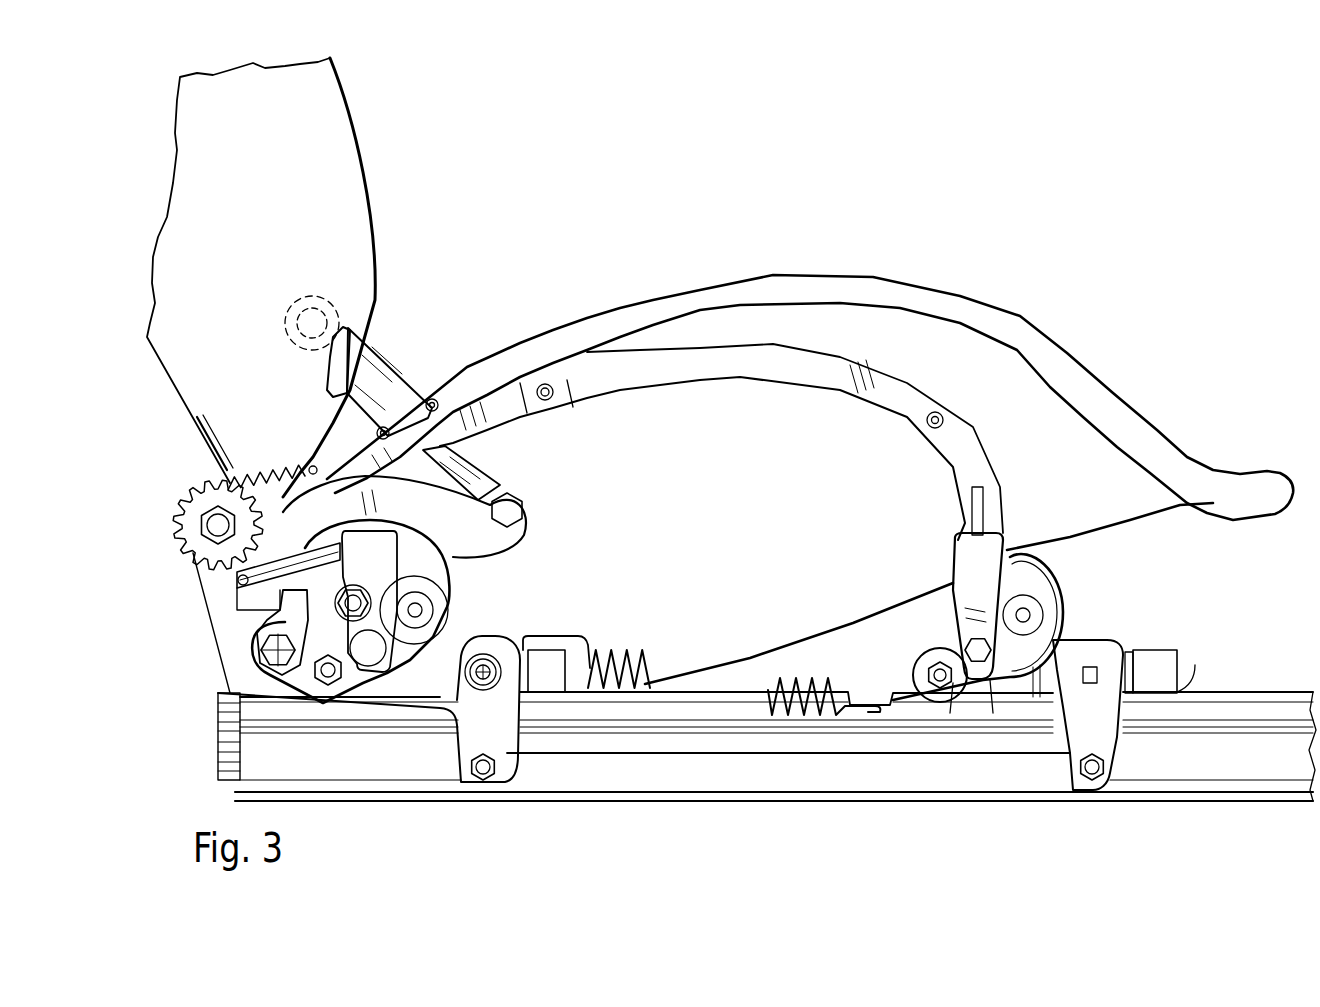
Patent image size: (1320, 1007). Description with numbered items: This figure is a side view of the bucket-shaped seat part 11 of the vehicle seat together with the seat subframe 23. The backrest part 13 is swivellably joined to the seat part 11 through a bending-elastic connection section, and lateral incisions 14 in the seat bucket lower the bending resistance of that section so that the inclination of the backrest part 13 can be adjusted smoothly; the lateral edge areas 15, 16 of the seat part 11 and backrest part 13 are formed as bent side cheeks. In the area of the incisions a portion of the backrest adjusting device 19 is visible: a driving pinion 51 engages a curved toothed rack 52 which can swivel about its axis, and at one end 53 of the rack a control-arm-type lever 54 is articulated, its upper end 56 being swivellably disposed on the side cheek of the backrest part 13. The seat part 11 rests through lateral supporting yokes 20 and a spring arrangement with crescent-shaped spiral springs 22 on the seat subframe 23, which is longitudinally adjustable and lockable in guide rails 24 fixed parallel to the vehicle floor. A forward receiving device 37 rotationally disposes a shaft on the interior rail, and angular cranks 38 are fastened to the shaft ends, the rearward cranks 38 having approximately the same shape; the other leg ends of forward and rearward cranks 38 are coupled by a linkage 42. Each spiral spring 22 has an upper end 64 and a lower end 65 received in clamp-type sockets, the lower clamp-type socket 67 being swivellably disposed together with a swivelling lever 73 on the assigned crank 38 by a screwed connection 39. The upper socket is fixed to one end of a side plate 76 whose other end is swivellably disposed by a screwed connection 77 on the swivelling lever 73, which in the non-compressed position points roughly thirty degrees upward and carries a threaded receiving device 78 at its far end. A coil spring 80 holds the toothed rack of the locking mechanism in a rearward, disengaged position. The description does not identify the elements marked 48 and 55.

The seat part 11 is at (754, 468).
The backrest part 13 is at (234, 212).
The lateral incisions 14 is at (362, 445).
The lateral edge area 15 is at (500, 362).
The lateral edge area 16 is at (376, 302).
The backrest adjusting device 19 is at (174, 652).
The supporting yoke 20 is at (722, 370).
The spiral spring 22 is at (452, 598).
The seat subframe 23 is at (822, 808).
The guide rails 24 is at (1216, 770).
The forward receiving device 37 is at (1160, 660).
The angular crank 38 is at (495, 730).
The screwed connection 39 is at (328, 682).
The linkage 42 is at (715, 788).
The toothed wheel 48 is at (162, 470).
The driving pinion 51 is at (192, 548).
The curved toothed rack 52 is at (417, 512).
The end of curved toothed rack 53 is at (485, 538).
The control-arm-type lever 54 is at (376, 370).
The strap 55 is at (493, 474).
The upper end of control-arm-type lever 56 is at (327, 295).
The upper end of spiral spring 64 is at (1013, 566).
The lower end of spiral spring 65 is at (1027, 688).
The lower clamp-type socket 67 is at (985, 682).
The swivelling lever 73 is at (967, 688).
The side plate 76 is at (984, 578).
The screwed connection 77 is at (973, 653).
The receiving device 78 is at (1040, 613).
The coil spring 80 is at (235, 480).